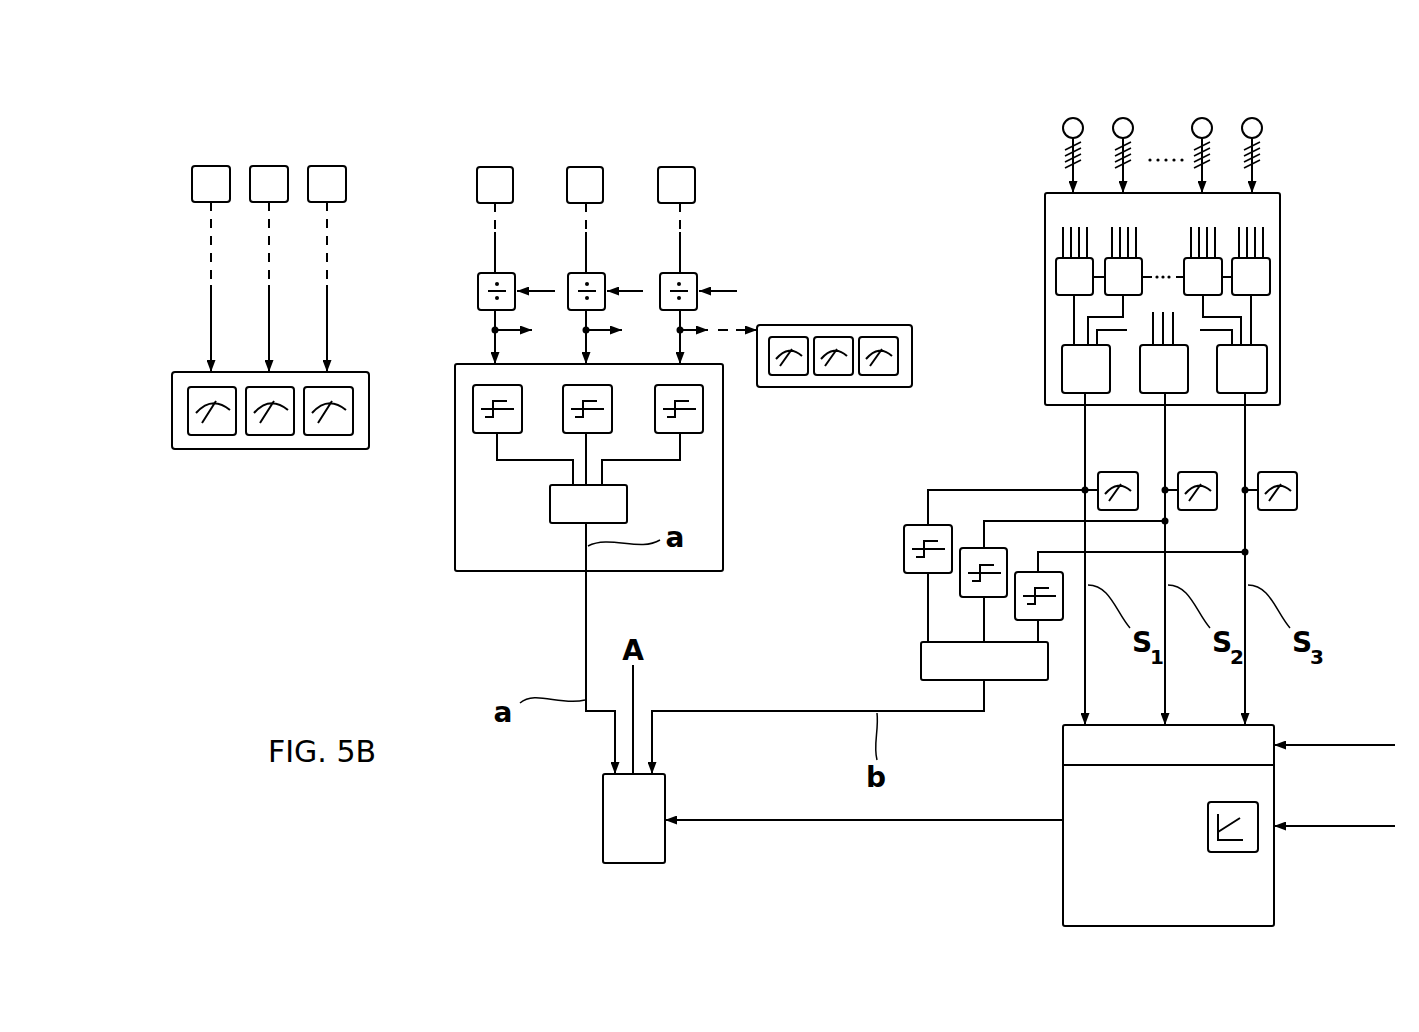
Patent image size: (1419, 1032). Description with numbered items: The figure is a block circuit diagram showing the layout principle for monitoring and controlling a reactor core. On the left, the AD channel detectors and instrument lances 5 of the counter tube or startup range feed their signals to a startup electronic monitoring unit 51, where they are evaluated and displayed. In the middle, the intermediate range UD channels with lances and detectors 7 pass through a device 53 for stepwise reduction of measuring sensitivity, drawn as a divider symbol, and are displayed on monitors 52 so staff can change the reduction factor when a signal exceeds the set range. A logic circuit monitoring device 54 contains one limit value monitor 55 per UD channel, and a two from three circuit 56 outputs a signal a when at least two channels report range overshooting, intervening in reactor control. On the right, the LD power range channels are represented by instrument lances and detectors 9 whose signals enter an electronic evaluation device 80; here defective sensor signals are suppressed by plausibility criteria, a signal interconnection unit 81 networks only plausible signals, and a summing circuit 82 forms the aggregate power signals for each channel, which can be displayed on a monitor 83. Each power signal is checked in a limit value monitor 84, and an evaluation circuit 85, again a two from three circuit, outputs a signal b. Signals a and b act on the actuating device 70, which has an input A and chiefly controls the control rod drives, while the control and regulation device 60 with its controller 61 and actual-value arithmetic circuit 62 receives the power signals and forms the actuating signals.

The instrument lances and detectors of the AD channels 5 is at (327, 172).
The lances and detectors of the intermediate range channels 7 is at (680, 172).
The instrument lances and detectors of the LD channels 9 is at (1073, 118).
The startup electronic monitoring unit 51 is at (215, 435).
The monitors 52 is at (835, 328).
The device for stepwise reduction of measuring sensitivity 53 is at (580, 280).
The logic circuit monitoring device 54 is at (705, 514).
The limit value monitor 55 is at (697, 420).
The two from three circuit 56 is at (549, 508).
The control and regulation device 60 is at (1072, 885).
The controller 61 is at (1247, 848).
The actual-value arithmetic circuit 62 is at (1068, 745).
The actuating device 70 is at (665, 848).
The electronic evaluation device 80 is at (1280, 236).
The signal interconnection unit 81 is at (1270, 272).
The summing circuit 82 is at (1257, 366).
The display or monitor 83 is at (1297, 490).
The limit value monitor 84 is at (904, 563).
The evaluation circuit 85 is at (921, 660).